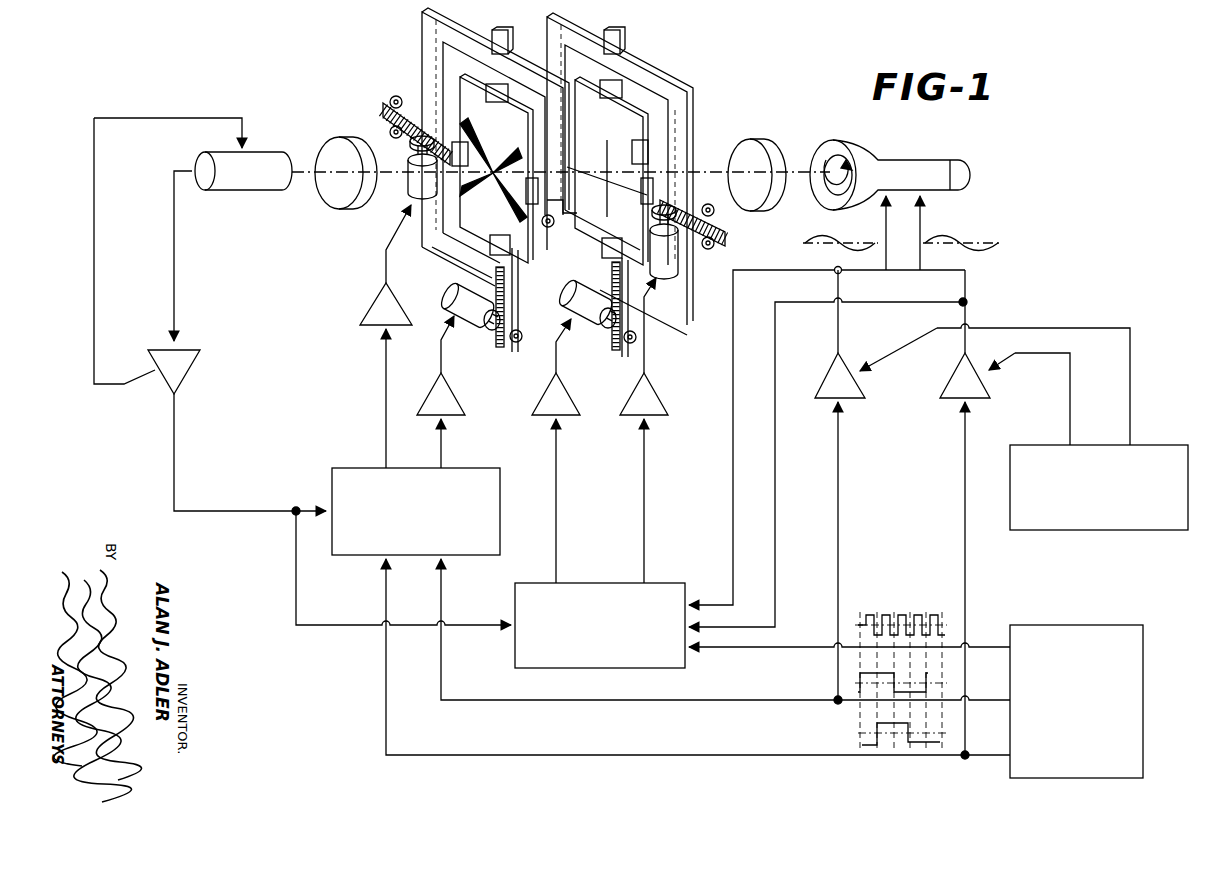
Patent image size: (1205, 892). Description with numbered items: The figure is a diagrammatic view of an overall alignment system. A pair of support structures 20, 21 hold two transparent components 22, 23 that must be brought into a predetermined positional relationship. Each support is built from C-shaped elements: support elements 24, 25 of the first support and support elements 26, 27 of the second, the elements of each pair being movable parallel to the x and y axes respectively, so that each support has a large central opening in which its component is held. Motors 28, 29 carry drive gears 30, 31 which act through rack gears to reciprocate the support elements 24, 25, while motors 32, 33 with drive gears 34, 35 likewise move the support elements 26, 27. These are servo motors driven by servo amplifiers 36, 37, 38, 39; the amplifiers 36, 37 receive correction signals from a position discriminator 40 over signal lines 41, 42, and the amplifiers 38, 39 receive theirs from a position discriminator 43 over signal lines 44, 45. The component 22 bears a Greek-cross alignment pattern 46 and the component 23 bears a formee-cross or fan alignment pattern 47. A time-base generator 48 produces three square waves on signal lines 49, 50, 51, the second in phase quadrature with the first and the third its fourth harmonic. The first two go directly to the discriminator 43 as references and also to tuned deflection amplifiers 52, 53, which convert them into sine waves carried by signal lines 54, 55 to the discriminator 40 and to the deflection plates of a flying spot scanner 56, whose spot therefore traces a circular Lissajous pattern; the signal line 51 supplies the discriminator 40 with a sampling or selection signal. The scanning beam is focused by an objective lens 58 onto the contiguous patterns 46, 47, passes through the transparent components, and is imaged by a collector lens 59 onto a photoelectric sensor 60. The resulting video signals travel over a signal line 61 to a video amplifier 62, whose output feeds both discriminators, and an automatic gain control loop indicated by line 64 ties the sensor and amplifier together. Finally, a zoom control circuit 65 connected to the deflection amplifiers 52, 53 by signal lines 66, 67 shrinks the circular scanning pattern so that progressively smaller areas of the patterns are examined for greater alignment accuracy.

The support structure 20 is at (640, 52).
The support structure 21 is at (412, 20).
The component 22 is at (633, 110).
The component 23 is at (528, 267).
The support element 24 is at (698, 118).
The support element 25 is at (677, 320).
The support element 26 is at (424, 52).
The support element 27 is at (426, 248).
The motor 28 is at (684, 252).
The motor 29 is at (574, 288).
The drive gear 30 is at (676, 206).
The drive gear 31 is at (604, 326).
The motor 32 is at (404, 196).
The motor 33 is at (446, 290).
The drive gear 34 is at (388, 132).
The drive gear 35 is at (482, 326).
The servo amplifier 36 is at (656, 400).
The servo amplifier 37 is at (568, 400).
The servo amplifier 38 is at (368, 306).
The servo amplifier 39 is at (452, 392).
The position discriminator 40 is at (618, 578).
The signal line 41 is at (644, 536).
The signal line 42 is at (556, 536).
The position discriminator 43 is at (342, 466).
The signal line 44 is at (384, 408).
The signal line 45 is at (442, 446).
The alignment pattern 46 is at (608, 166).
The alignment pattern 47 is at (472, 200).
The time-base generator 48 is at (1088, 624).
The signal line 49 is at (816, 700).
The signal line 50 is at (818, 754).
The signal line 51 is at (816, 646).
The tuned deflection amplifier 52 is at (828, 380).
The tuned deflection amplifier 53 is at (942, 382).
The signal line 54 is at (732, 432).
The signal line 55 is at (775, 478).
The flying spot scanner 56 is at (930, 158).
The objective lens 58 is at (762, 140).
The collector lens 59 is at (330, 210).
The photoelectric sensor 60 is at (233, 190).
The signal line 61 is at (195, 282).
The video amplifier 62 is at (183, 372).
The automatic gain control loop line 64 is at (118, 276).
The zoom control circuit 65 is at (1181, 446).
The signal line 66 is at (1046, 332).
The signal line 67 is at (1020, 362).